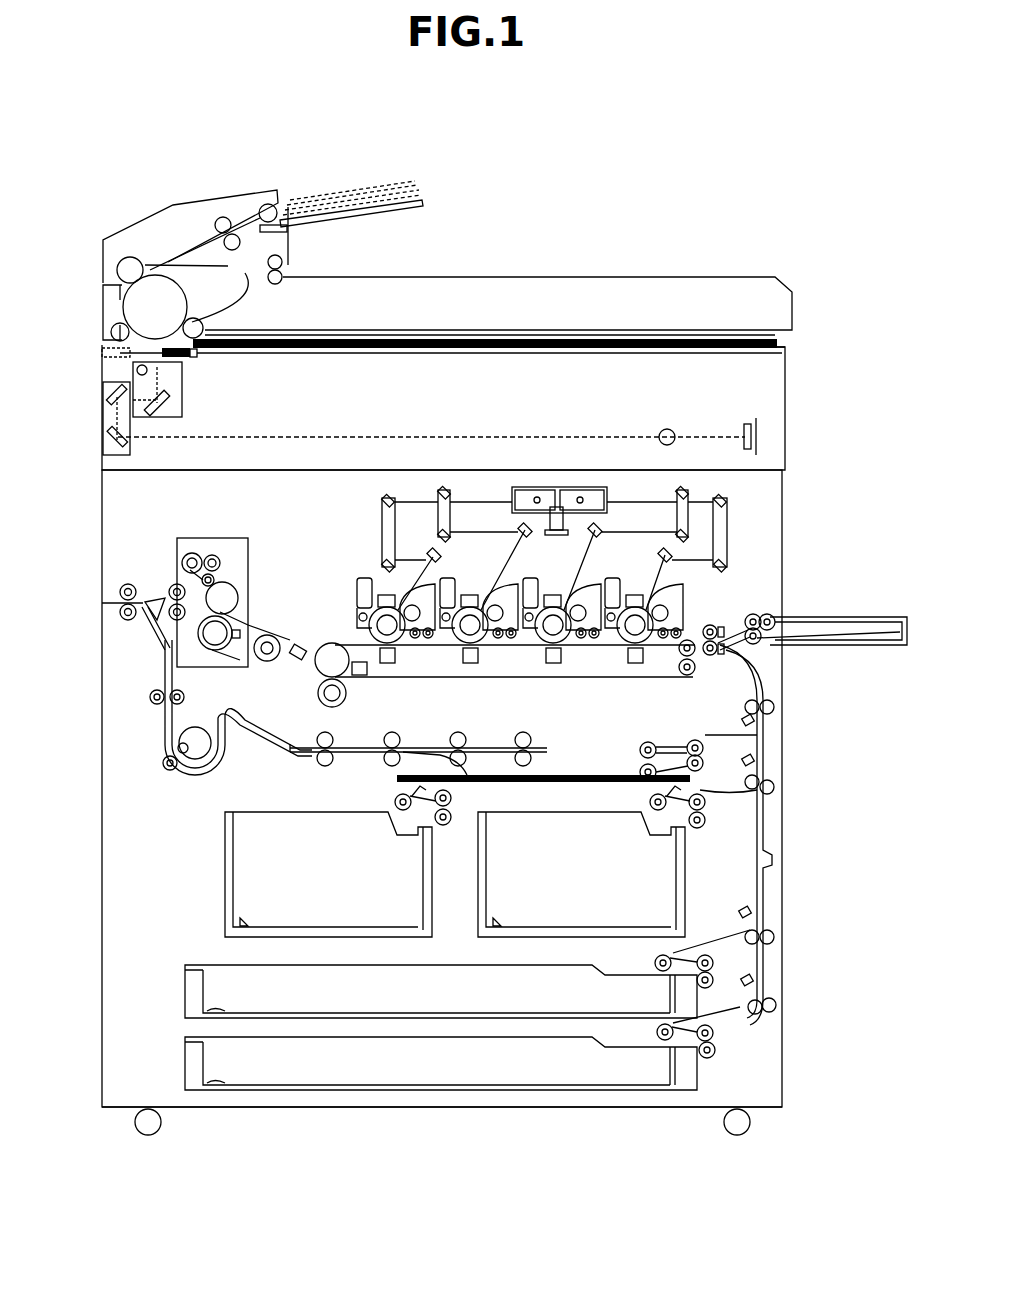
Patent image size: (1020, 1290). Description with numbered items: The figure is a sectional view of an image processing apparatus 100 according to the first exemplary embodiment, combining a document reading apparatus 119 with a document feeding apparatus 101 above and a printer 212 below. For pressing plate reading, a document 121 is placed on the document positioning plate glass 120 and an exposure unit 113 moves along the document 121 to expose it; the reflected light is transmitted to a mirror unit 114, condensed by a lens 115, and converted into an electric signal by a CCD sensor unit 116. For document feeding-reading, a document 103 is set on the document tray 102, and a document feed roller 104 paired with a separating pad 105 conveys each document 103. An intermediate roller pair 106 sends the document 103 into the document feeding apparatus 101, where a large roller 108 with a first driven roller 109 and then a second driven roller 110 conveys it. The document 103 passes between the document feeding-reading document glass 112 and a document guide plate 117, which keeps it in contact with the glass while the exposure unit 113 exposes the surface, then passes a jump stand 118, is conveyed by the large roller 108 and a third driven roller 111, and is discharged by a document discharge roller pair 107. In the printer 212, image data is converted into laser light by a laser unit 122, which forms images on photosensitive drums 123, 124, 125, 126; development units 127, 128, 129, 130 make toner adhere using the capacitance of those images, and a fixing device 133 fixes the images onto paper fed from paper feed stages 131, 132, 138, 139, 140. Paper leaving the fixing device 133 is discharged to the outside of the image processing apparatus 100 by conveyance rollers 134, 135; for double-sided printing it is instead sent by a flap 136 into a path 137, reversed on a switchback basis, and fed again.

The image processing apparatus 100 is at (444, 108).
The document feeding apparatus 101 is at (795, 307).
The document tray 102 is at (424, 204).
The document 103 is at (378, 190).
The document feed roller 104 is at (270, 190).
The separating pad 105 is at (285, 233).
The intermediate roller pair 106 is at (222, 200).
The document discharge roller pair 107 is at (283, 266).
The large roller 108 is at (140, 307).
The first driven roller 109 is at (118, 268).
The second driven roller 110 is at (112, 332).
The third driven roller 111 is at (204, 325).
The document feeding-reading document glass 112 is at (105, 352).
The exposure unit 113 is at (182, 400).
The mirror unit 114 is at (105, 437).
The lens 115 is at (667, 428).
The CCD sensor unit 116 is at (748, 422).
The document guide plate 117 is at (178, 358).
The jump stand 118 is at (193, 358).
The document reading apparatus 119 is at (787, 430).
The document positioning plate glass 120 is at (787, 352).
The document 121 is at (615, 338).
The laser unit 122 is at (586, 488).
The photosensitive drum 123 is at (635, 632).
The photosensitive drum 124 is at (553, 632).
The photosensitive drum 125 is at (470, 632).
The photosensitive drum 126 is at (387, 632).
The development unit 127 is at (667, 638).
The development unit 128 is at (585, 638).
The development unit 129 is at (502, 638).
The development unit 130 is at (418, 638).
The paper feed stage 131 is at (478, 883).
The paper feed stage 132 is at (225, 882).
The fixing device 133 is at (250, 566).
The conveyance roller 134 is at (170, 586).
The conveyance roller 135 is at (124, 618).
The flap 136 is at (160, 612).
The path 137 is at (152, 702).
The paper feed stage 138 is at (840, 617).
The paper feed stage 139 is at (185, 992).
The paper feed stage 140 is at (185, 1060).
The printer 212 is at (443, 1108).